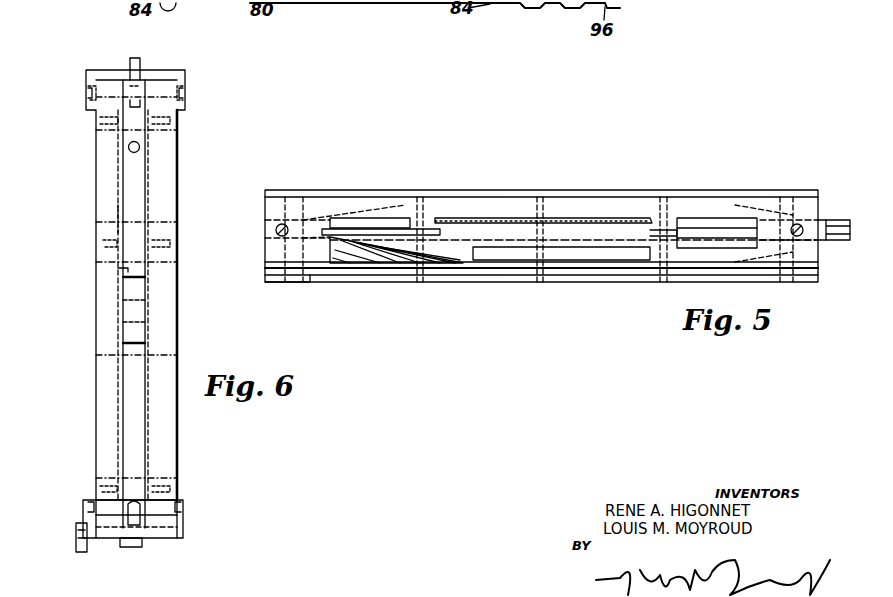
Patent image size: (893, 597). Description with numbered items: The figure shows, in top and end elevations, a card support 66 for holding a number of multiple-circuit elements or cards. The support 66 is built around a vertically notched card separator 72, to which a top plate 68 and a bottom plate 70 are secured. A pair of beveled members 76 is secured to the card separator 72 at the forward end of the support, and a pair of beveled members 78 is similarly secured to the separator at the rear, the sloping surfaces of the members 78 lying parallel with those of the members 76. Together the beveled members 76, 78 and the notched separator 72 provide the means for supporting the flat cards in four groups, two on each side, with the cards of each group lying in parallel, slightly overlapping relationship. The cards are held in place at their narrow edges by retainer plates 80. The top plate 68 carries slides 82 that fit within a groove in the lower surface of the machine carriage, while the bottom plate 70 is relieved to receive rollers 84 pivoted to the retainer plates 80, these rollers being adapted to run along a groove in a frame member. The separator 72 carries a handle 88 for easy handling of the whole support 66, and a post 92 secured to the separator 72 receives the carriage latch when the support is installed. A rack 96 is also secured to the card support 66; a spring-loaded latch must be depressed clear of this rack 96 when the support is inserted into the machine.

In FIG. 6, the housing body 66 is at (186, 133).
In FIG. 5, the housing body 66 is at (491, 186).
In FIG. 6, the top plate 68 is at (166, 70).
In FIG. 5, the top plate 68 is at (508, 207).
In FIG. 6, the bottom plate 70 is at (160, 535).
In FIG. 6, the card separator 72 is at (179, 152).
In FIG. 5, the card separator 72 is at (576, 225).
In FIG. 6, the beveled members 76 is at (135, 210).
In FIG. 5, the beveled members 76 is at (810, 188).
In FIG. 5, the beveled members 78 is at (360, 206).
In FIG. 6, the retainer plates 80 is at (87, 80).
In FIG. 5, the retainer plates 80 is at (400, 196).
In FIG. 6, the slides 82 is at (139, 60).
In FIG. 5, the slides 82 is at (698, 230).
In FIG. 6, the rollers 84 is at (132, 548).
In FIG. 6, the handle 88 is at (120, 268).
In FIG. 5, the handle 88 is at (838, 222).
In FIG. 6, the post 92 is at (128, 149).
In FIG. 5, the post 92 is at (814, 238).
In FIG. 6, the rack 96 is at (78, 546).
In FIG. 5, the rack 96 is at (305, 283).